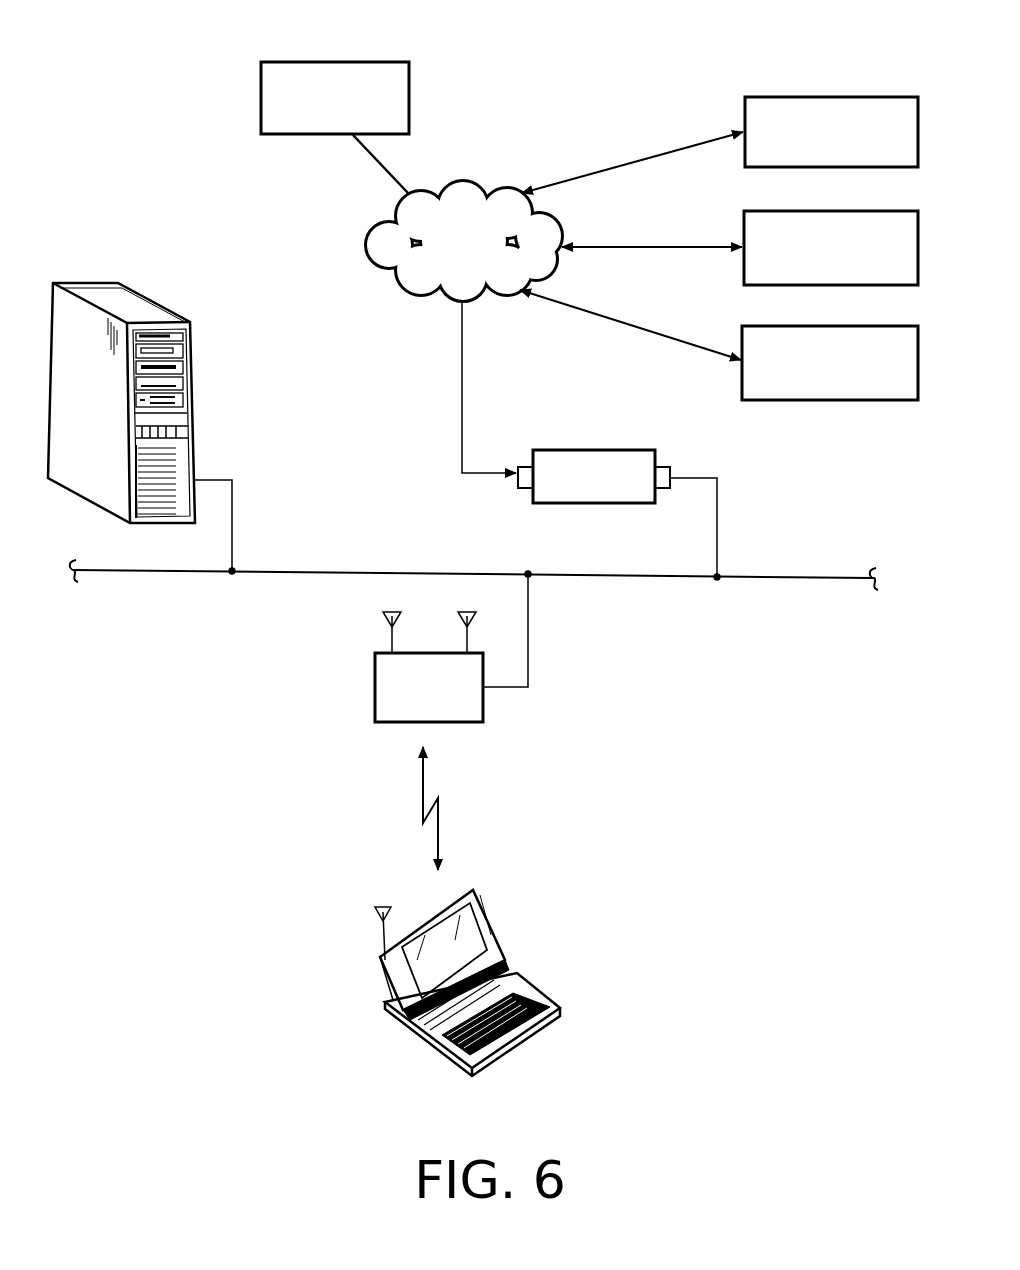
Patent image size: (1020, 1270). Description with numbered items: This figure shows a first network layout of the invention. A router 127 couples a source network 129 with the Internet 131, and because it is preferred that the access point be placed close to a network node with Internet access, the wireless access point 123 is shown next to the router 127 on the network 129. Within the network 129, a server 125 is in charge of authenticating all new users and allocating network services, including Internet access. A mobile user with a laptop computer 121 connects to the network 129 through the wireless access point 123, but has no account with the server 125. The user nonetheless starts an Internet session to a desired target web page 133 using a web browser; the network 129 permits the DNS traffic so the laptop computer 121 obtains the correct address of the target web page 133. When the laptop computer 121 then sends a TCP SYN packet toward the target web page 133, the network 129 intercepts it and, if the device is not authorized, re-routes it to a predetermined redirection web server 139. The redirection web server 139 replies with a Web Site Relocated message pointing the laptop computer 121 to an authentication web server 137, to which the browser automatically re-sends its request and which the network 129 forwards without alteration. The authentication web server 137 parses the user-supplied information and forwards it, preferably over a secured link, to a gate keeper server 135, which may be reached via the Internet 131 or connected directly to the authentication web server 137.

The laptop computer 121 is at (545, 1027).
The access point 123 is at (375, 663).
The server 125 is at (140, 295).
The router 127 is at (600, 450).
The source network 129 is at (317, 569).
The Internet 131 is at (377, 223).
The target web page 133 is at (278, 62).
The gate keeper server 135 is at (762, 326).
The authentication web server 137 is at (762, 211).
The redirection web server 139 is at (762, 97).